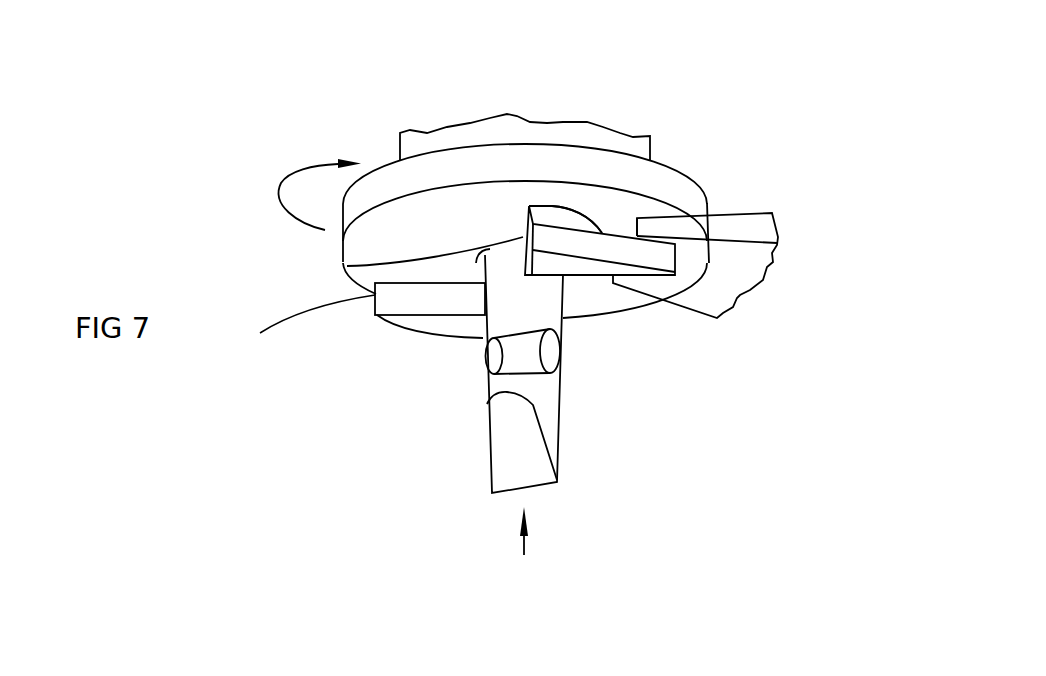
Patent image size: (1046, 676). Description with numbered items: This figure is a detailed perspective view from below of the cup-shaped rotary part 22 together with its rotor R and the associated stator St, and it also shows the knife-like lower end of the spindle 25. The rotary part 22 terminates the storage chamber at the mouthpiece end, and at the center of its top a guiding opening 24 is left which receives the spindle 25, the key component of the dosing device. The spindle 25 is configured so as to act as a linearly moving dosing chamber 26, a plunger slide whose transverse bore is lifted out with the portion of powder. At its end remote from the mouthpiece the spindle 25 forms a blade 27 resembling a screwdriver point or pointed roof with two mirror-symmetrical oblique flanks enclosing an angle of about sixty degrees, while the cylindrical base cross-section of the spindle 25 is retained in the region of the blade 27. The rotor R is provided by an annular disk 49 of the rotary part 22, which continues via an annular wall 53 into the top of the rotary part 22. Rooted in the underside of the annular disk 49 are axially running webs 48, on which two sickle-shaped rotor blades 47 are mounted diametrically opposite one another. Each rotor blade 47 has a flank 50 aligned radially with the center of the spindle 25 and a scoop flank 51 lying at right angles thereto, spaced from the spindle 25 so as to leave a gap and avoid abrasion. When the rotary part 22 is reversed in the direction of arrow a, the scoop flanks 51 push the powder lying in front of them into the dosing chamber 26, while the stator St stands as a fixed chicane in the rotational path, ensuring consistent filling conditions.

The rotary part 22 is at (473, 76).
The guiding opening 24 is at (347, 265).
The spindle 25 is at (553, 388).
The dosing chamber 26 is at (507, 366).
The blade 27 is at (518, 442).
The rotor blades 47 is at (597, 240).
The webs 48 is at (555, 217).
The annular disk 49 is at (530, 158).
The flank 50 is at (527, 243).
The scoop flank 51 is at (442, 300).
The annular wall 53 is at (627, 143).
The arrow a is at (320, 186).
The rotor R is at (306, 327).
The stator St is at (707, 292).